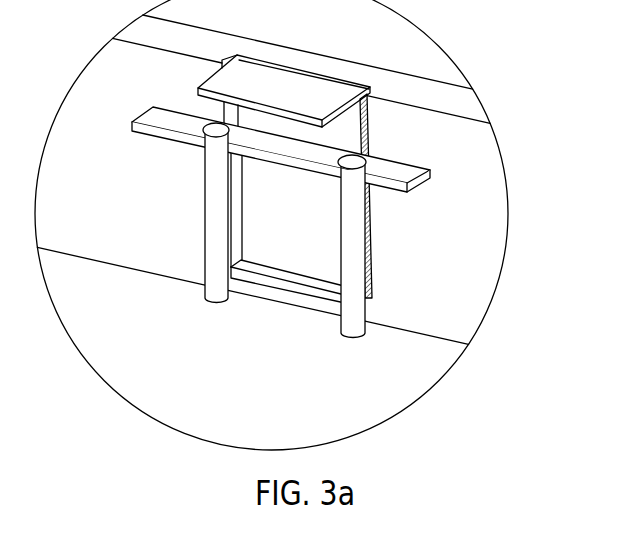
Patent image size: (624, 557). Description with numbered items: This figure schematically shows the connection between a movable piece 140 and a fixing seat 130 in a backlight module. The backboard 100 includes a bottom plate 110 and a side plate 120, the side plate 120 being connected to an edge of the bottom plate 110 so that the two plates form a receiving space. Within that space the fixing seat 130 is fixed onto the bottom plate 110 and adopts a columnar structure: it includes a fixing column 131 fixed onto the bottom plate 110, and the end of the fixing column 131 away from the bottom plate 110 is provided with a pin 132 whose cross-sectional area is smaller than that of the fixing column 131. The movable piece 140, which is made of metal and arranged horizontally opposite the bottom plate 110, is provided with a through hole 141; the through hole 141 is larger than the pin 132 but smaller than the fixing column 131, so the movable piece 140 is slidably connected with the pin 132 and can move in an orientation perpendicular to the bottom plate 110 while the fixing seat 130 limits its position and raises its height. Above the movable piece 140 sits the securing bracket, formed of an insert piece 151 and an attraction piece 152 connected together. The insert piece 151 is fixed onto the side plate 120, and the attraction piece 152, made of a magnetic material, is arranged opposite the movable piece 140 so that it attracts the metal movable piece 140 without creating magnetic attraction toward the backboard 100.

The backboard 100 is at (302, 232).
The bottom plate 110 is at (262, 347).
The side plate 120 is at (465, 298).
The fixing seat 130 is at (221, 230).
The fixing column 131 is at (210, 227).
The pin 132 is at (214, 124).
The movable piece 140 is at (401, 172).
The through hole 141 is at (362, 168).
The insert piece 151 is at (288, 268).
The attraction piece 152 is at (290, 80).